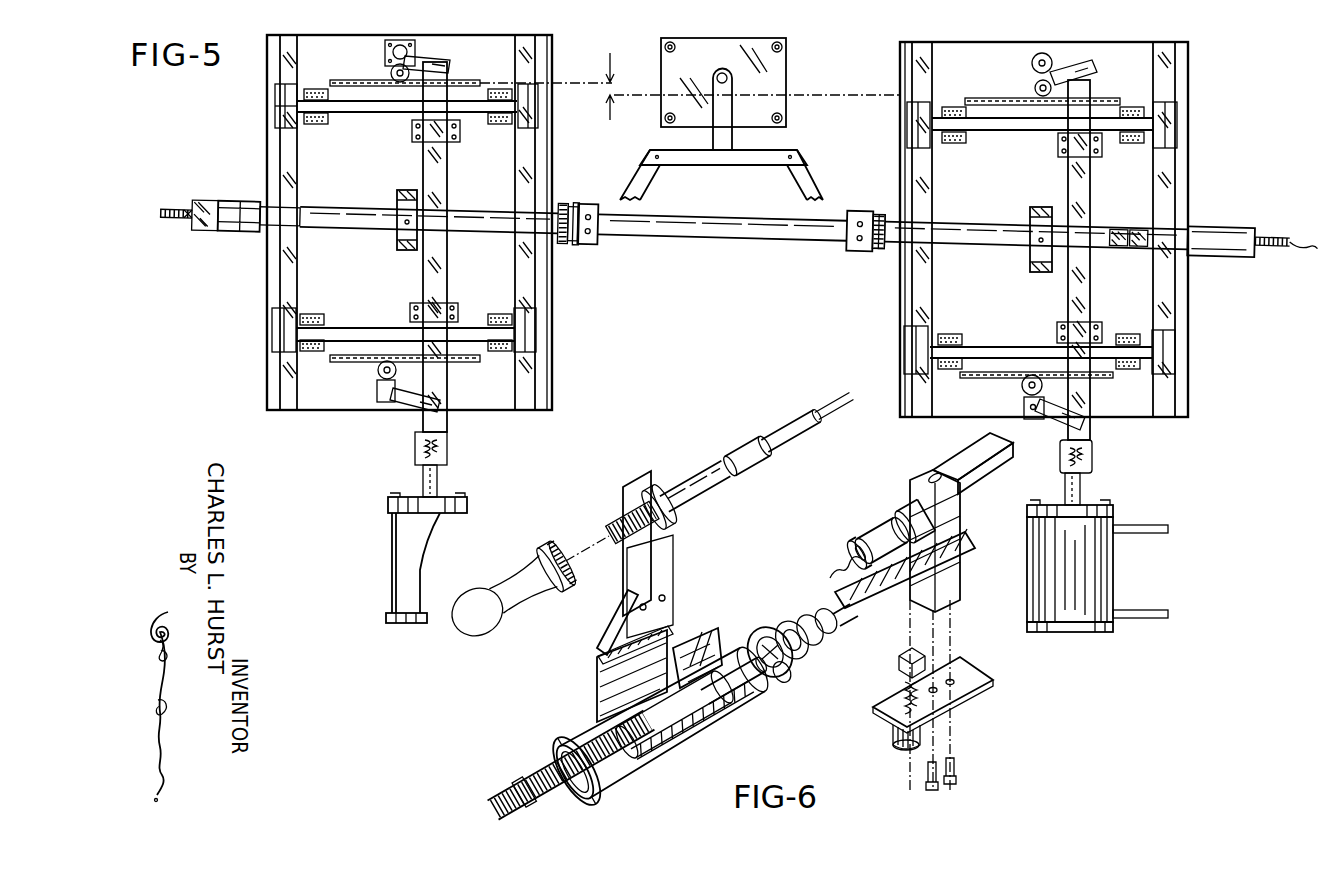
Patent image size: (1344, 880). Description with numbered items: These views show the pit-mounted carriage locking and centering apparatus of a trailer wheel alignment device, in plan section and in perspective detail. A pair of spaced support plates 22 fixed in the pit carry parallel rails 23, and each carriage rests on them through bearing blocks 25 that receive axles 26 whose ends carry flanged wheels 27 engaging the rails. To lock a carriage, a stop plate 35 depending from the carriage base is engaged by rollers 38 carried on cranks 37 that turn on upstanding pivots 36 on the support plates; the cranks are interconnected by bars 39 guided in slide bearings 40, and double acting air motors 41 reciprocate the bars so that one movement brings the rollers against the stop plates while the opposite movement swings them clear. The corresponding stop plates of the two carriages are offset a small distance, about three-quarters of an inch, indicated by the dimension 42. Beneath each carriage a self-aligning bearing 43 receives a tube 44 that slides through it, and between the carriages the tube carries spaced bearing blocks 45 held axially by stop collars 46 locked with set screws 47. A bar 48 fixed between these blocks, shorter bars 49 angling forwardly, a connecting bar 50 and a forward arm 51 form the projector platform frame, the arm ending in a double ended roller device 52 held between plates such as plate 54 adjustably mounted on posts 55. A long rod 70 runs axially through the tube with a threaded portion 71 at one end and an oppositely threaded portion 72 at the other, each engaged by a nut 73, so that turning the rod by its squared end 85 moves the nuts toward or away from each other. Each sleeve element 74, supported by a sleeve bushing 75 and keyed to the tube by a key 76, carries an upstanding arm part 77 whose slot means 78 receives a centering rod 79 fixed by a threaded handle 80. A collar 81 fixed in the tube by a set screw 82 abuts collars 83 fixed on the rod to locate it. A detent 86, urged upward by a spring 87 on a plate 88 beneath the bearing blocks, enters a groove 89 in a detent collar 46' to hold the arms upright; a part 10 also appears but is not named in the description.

In FIG. 5, the support plates 22 is at (488, 400).
In FIG. 5, the rails 23 is at (289, 400).
In FIG. 5, the bearing blocks 25 is at (293, 138).
In FIG. 5, the axles 26 is at (372, 112).
In FIG. 5, the flanged wheels 27 is at (515, 133).
In FIG. 5, the stop plate 35 is at (361, 80).
In FIG. 5, the upstanding pivots 36 is at (393, 406).
In FIG. 5, the cranks 37 is at (385, 395).
In FIG. 5, the rollers 38 is at (420, 55).
In FIG. 5, the bars 39 is at (445, 285).
In FIG. 5, the slide bearings 40 is at (423, 140).
In FIG. 5, the double acting air motors 41 is at (450, 515).
In FIG. 5, the dimension 42 is at (605, 95).
In FIG. 5, the self-aligning bearing 43 is at (402, 238).
In FIG. 5, the tube 44 is at (721, 251).
In FIG. 6, the tube 44 is at (764, 699).
In FIG. 5, the bearing blocks 45 is at (724, 250).
In FIG. 6, the bearing blocks 45 is at (915, 488).
In FIG. 5, the stop collars 46 is at (720, 228).
In FIG. 6, the stop collars 46 is at (860, 540).
In FIG. 5, the detent collar 46' is at (593, 210).
In FIG. 6, the detent collar 46' is at (889, 512).
In FIG. 5, the set screws 47 is at (722, 234).
In FIG. 6, the set screws 47 is at (847, 553).
In FIG. 6, the bar 48 is at (975, 483).
In FIG. 5, the shorter bars 49 is at (791, 168).
In FIG. 5, the bar 50 is at (727, 162).
In FIG. 5, the arm 51 is at (735, 136).
In FIG. 5, the double ended roller device 52 is at (715, 78).
In FIG. 5, the plate 54 is at (785, 76).
In FIG. 5, the posts 55 is at (662, 48).
In FIG. 5, the rod 70 is at (759, 226).
In FIG. 6, the rod 70 is at (768, 625).
In FIG. 5, the threaded portion 71 is at (166, 230).
In FIG. 6, the threaded portion 71 is at (550, 804).
In FIG. 5, the threaded portion 72 is at (1310, 255).
In FIG. 5, the nut 73 is at (191, 233).
In FIG. 6, the nut 73 is at (602, 799).
In FIG. 5, the sleeve element 74 is at (731, 243).
In FIG. 6, the sleeve element 74 is at (647, 778).
In FIG. 5, the sleeve bushing 75 is at (265, 238).
In FIG. 6, the sleeve bushing 75 is at (718, 728).
In FIG. 6, the key 76 is at (680, 608).
In FIG. 6, the upstanding arm part 77 is at (616, 625).
In FIG. 6, the slot means 78 is at (636, 486).
In FIG. 6, the centering rod 79 is at (695, 490).
In FIG. 6, the handle 80 is at (528, 600).
In FIG. 5, the collar 81 is at (1107, 260).
In FIG. 6, the collar 81 is at (820, 660).
In FIG. 6, the set screw 82 is at (805, 606).
In FIG. 5, the collars 83 is at (723, 252).
In FIG. 6, the collars 83 is at (785, 680).
In FIG. 5, the squared end 85 is at (722, 210).
In FIG. 6, the squared end 85 is at (493, 808).
In FIG. 6, the detent 86 is at (898, 663).
In FIG. 6, the spring 87 is at (900, 692).
In FIG. 6, the plate 88 is at (970, 713).
In FIG. 6, the groove 89 is at (940, 625).
In FIG. 6, the washer 10 is at (831, 640).